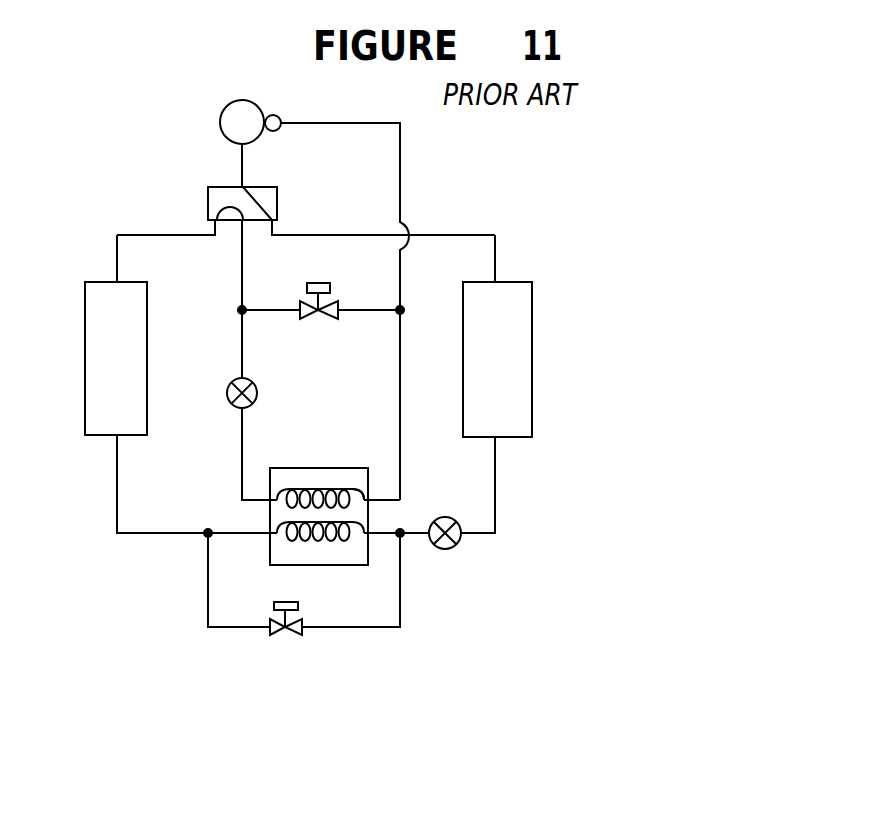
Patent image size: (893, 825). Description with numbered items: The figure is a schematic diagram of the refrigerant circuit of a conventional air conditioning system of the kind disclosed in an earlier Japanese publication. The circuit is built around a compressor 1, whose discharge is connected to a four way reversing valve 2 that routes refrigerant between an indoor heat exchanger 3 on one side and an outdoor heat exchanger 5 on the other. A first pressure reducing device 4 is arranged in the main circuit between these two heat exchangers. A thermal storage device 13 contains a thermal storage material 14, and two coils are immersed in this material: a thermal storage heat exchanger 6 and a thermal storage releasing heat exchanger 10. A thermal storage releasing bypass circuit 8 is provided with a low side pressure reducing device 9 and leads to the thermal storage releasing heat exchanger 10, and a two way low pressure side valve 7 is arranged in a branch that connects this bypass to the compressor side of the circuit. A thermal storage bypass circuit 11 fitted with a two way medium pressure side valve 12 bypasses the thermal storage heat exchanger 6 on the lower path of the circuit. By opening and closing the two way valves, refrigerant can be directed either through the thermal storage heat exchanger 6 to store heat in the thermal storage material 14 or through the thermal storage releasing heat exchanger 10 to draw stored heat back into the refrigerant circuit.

The compressor 1 is at (221, 114).
The four way reversing valve 2 is at (208, 195).
The indoor heat exchanger 3 is at (532, 292).
The first pressure reducing device 4 is at (454, 548).
The outdoor heat exchanger 5 is at (85, 283).
The thermal storage heat exchanger 6 is at (335, 537).
The two way low pressure side valve 7 is at (318, 320).
The thermal storage releasing bypass circuit 8 is at (241, 343).
The low side pressure reducing device 9 is at (227, 396).
The thermal storage releasing heat exchanger 10 is at (289, 489).
The thermal storage bypass circuit 11 is at (227, 630).
The two way medium pressure side valve 12 is at (286, 634).
The thermal storage device 13 is at (320, 468).
The thermal storage material 14 is at (335, 484).